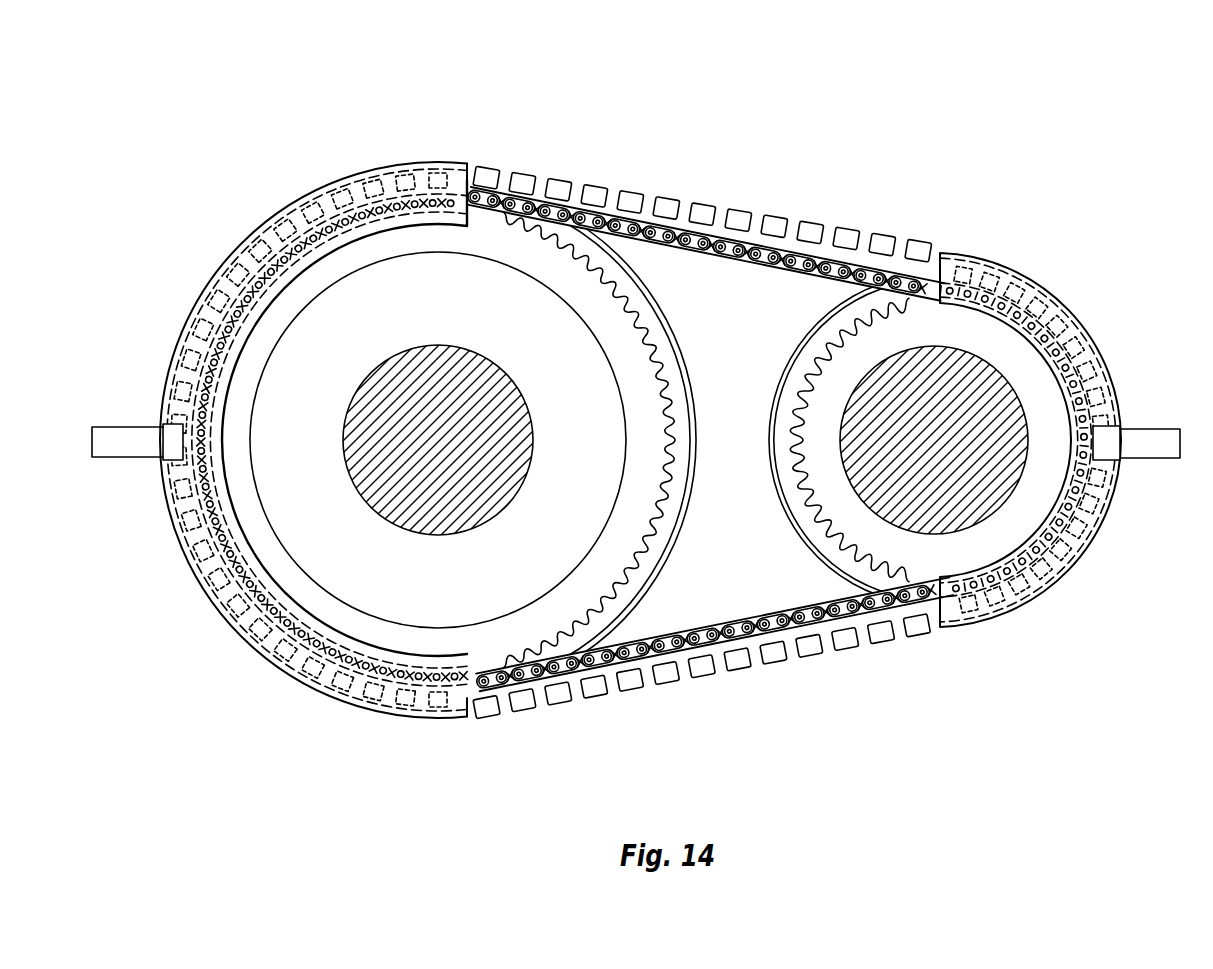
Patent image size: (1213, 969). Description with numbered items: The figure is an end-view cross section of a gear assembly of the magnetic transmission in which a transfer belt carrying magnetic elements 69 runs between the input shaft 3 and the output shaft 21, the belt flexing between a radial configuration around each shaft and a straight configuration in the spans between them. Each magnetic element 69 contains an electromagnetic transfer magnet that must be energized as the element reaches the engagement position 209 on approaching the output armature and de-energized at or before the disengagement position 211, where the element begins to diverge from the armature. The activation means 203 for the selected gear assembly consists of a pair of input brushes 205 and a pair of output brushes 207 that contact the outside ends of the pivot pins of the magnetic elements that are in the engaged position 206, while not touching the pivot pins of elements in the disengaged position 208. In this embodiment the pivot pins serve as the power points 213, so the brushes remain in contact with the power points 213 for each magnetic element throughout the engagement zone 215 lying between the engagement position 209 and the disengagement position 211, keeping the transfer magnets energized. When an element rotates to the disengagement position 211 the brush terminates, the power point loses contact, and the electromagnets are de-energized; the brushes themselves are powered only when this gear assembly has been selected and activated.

The output shaft 21 is at (383, 363).
The input shaft 3 is at (1012, 488).
The disengaged position 208 is at (700, 204).
The magnetic elements 69 is at (596, 182).
The engaged position 206 is at (350, 175).
The output brushes 207 is at (332, 698).
The engagement position 209 is at (468, 162).
The disengagement position 211 is at (473, 720).
The engagement zone 215 is at (198, 576).
The power points 213 is at (440, 160).
The activation means 203 is at (1060, 298).
The input brushes 205 is at (1102, 362).